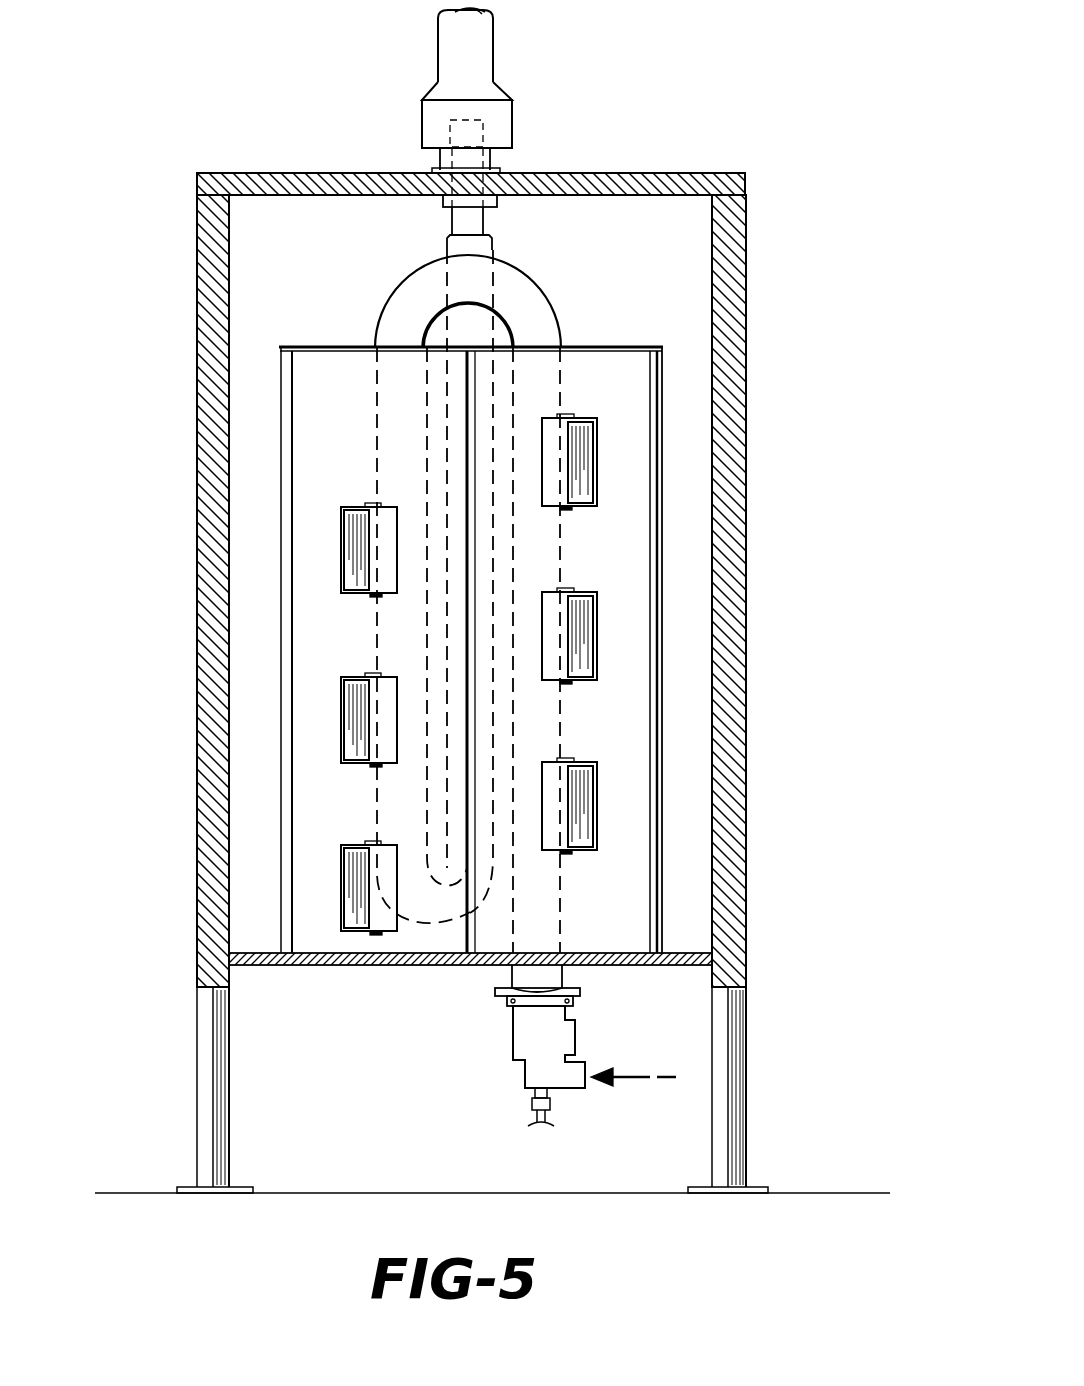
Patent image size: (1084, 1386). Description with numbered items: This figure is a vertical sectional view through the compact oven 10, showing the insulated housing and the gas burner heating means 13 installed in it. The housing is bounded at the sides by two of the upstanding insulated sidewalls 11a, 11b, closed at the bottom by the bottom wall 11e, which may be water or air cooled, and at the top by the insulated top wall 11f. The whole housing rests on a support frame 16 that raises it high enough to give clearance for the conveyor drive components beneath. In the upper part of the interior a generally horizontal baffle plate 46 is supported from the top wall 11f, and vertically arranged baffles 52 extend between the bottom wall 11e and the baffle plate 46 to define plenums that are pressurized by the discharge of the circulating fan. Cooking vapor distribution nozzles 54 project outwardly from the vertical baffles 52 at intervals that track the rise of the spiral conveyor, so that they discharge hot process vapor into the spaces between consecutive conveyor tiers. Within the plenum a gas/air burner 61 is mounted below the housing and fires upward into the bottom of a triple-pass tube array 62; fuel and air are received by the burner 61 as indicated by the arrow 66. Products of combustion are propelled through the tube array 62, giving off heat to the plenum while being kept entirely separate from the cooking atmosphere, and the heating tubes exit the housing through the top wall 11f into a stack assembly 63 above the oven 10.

The compact oven 10 is at (655, 79).
The upstanding insulated sidewall 11a is at (745, 637).
The upstanding insulated sidewall 11b is at (206, 655).
The bottom wall 11e is at (337, 966).
The insulated top wall 11f is at (625, 173).
The heating means 13 is at (494, 46).
The support frame 16 is at (232, 1130).
The baffle plate 46 is at (607, 348).
The vertically arranged baffles 52 is at (346, 428).
The cooking vapor distribution nozzles 54 is at (345, 588).
The gas/air burner 61 is at (518, 1033).
The tube array 62 is at (540, 290).
The stack assembly 63 is at (512, 115).
The arrow 66 is at (610, 1073).